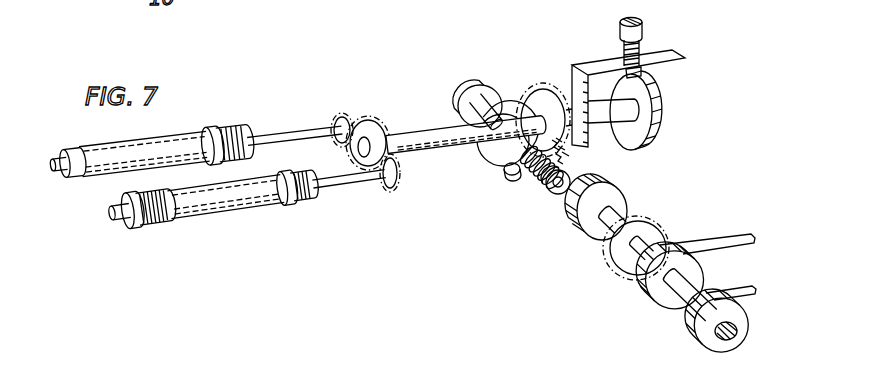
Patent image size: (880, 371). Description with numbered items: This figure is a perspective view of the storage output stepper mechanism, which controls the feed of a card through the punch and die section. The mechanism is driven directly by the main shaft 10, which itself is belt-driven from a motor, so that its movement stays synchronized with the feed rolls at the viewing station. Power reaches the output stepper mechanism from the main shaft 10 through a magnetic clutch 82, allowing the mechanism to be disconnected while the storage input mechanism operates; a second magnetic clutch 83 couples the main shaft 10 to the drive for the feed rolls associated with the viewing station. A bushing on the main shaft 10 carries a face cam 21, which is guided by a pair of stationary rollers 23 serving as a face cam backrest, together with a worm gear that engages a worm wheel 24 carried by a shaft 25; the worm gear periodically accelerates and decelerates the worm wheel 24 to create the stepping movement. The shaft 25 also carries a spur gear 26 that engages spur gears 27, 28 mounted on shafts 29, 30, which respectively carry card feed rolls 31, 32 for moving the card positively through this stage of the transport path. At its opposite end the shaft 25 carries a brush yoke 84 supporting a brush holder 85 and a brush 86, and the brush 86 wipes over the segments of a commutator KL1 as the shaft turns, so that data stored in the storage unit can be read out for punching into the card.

The main shaft 10 is at (500, 167).
The face cam 21 is at (495, 155).
The stationary rollers 23 is at (511, 177).
The worm wheel 24 is at (545, 90).
The shaft 25 is at (426, 133).
The spur gear 26 is at (372, 132).
The spur gear 27 is at (390, 190).
The spur gear 28 is at (289, 131).
The shaft 29 is at (342, 189).
The shaft 30 is at (342, 113).
The card feed roll 31 is at (298, 212).
The card feed roll 32 is at (220, 132).
The magnetic clutch 82 is at (605, 190).
The magnetic clutch 83 is at (684, 316).
The brush yoke 84 is at (596, 63).
The brush holder 85 is at (644, 27).
The brush 86 is at (643, 76).
The commutator KL1 is at (663, 134).